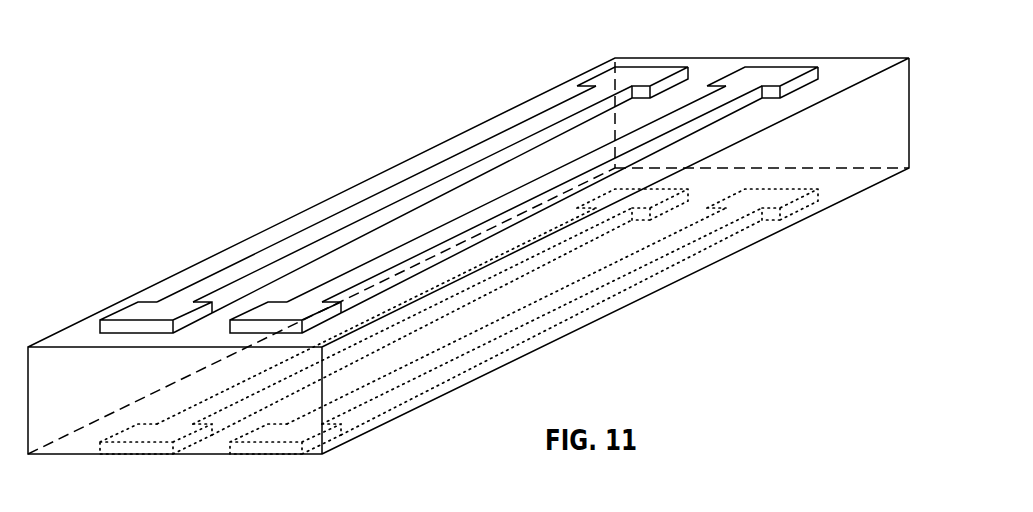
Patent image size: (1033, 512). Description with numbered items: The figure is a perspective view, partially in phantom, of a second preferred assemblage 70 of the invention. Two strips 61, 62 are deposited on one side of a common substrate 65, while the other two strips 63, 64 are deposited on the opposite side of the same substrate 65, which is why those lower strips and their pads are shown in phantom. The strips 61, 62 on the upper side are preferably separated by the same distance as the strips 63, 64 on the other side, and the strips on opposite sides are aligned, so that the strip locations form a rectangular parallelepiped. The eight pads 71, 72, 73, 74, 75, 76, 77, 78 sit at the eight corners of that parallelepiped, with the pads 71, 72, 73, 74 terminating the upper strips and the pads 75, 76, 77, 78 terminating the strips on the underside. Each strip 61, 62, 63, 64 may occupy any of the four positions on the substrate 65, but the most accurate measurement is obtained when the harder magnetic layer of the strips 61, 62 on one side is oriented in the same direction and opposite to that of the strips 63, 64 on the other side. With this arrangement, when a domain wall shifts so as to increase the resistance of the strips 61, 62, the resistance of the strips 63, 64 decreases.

The assemblage 70 is at (315, 154).
The substrate 65 is at (838, 205).
The strip 61 is at (756, 108).
The strip 62 is at (502, 127).
The strip 63 is at (190, 398).
The strip 64 is at (670, 278).
The pad 71 is at (765, 77).
The pad 72 is at (277, 309).
The pad 73 is at (635, 77).
The pad 74 is at (138, 312).
The pad 75 is at (700, 186).
The pad 76 is at (148, 453).
The pad 77 is at (782, 222).
The pad 78 is at (278, 453).